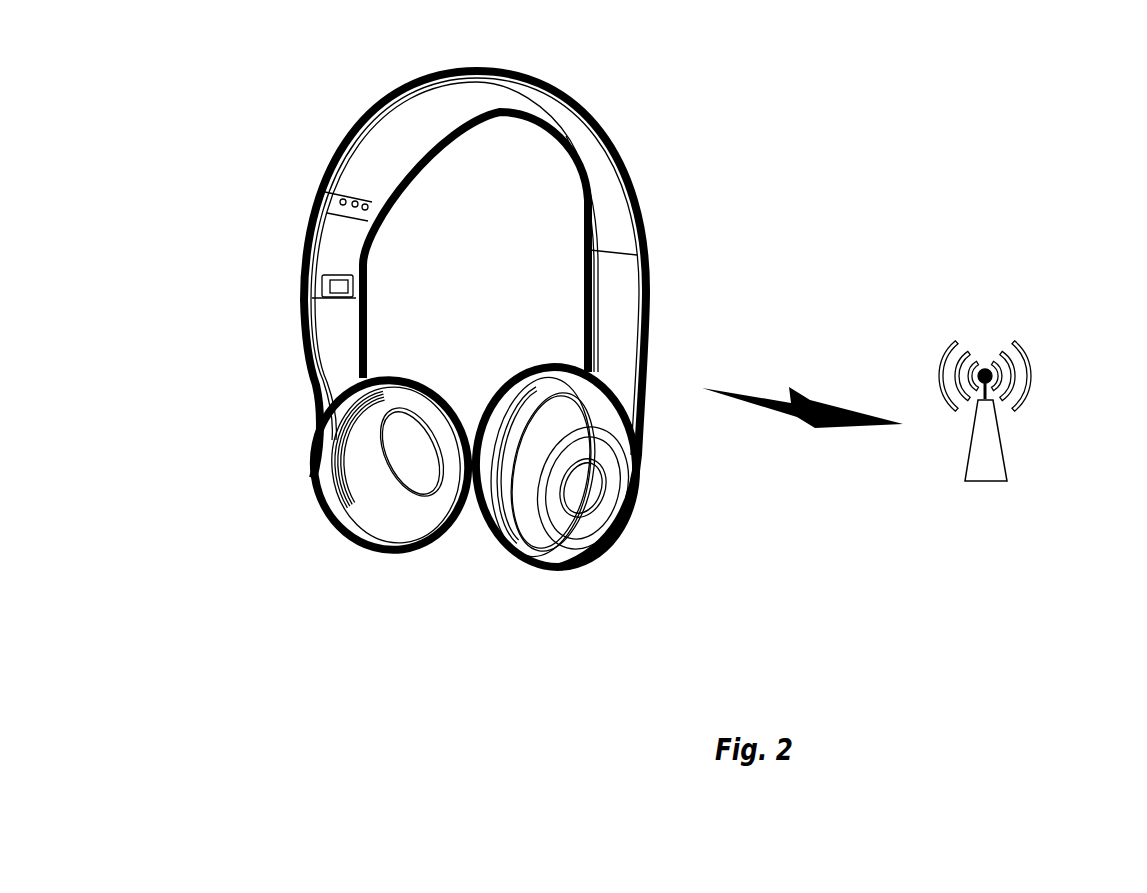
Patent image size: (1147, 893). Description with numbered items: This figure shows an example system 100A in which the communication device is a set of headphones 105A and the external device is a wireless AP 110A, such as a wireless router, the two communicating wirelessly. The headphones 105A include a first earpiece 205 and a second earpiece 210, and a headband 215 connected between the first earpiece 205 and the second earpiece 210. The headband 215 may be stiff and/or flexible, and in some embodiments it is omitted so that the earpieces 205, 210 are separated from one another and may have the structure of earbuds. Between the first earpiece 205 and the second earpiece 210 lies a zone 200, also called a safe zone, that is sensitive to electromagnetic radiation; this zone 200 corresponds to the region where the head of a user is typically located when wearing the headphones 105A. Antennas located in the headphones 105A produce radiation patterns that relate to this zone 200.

The system 100A is at (985, 125).
The headphones 105A is at (311, 91).
The wireless AP 110A is at (1030, 368).
The zone 200 is at (572, 288).
The first earpiece 205 is at (312, 482).
The second earpiece 210 is at (583, 508).
The headband 215 is at (570, 127).